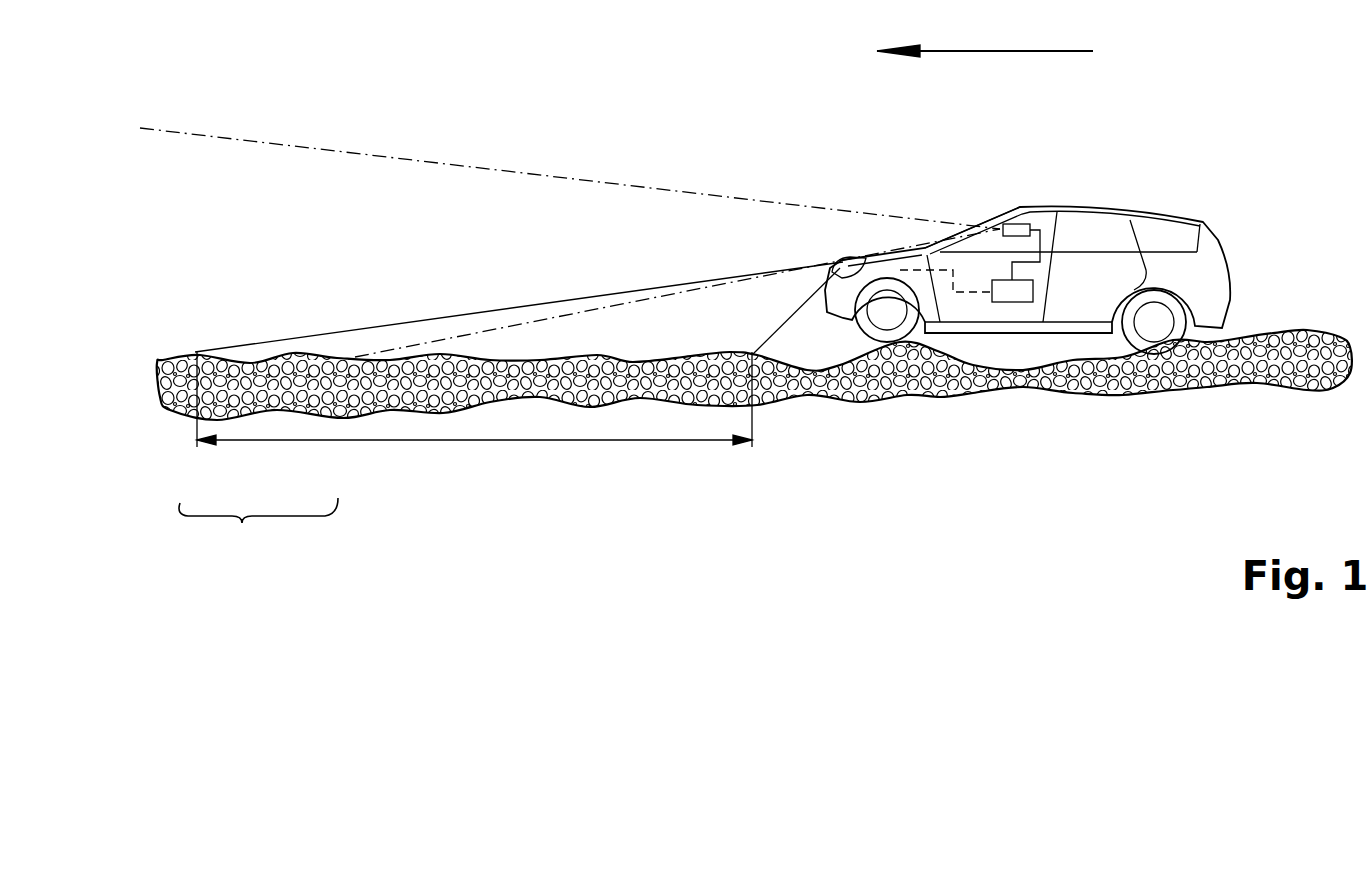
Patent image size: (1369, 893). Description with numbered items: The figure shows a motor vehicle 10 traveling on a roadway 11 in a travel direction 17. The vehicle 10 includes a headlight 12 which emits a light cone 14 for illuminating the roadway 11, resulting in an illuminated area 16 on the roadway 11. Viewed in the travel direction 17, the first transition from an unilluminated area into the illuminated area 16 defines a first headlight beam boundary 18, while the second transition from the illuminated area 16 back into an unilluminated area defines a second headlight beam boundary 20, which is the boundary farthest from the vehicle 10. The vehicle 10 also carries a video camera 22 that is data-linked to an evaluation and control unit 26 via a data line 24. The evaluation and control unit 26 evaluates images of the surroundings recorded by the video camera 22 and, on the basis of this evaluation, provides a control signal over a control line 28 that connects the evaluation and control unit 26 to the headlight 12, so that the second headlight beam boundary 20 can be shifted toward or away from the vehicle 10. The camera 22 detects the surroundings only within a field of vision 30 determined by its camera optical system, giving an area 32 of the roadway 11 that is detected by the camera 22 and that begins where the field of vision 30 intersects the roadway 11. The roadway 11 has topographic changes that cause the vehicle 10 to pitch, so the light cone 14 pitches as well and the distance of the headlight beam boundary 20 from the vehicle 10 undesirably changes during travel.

The motor vehicle 10 is at (1200, 218).
The roadway 11 is at (1303, 330).
The headlight 12 is at (845, 262).
The light cone 14 is at (470, 316).
The illuminated area 16 is at (476, 442).
The travel direction 17 is at (1000, 52).
The first headlight beam boundary 18 is at (750, 354).
The second headlight beam boundary 20 is at (195, 352).
The video camera 22 is at (1010, 222).
The data line 24 is at (1042, 240).
The evaluation and control unit 26 is at (1034, 291).
The control line 28 is at (920, 238).
The field of vision 30 is at (548, 175).
The area of roadway detected by video camera 32 is at (258, 528).